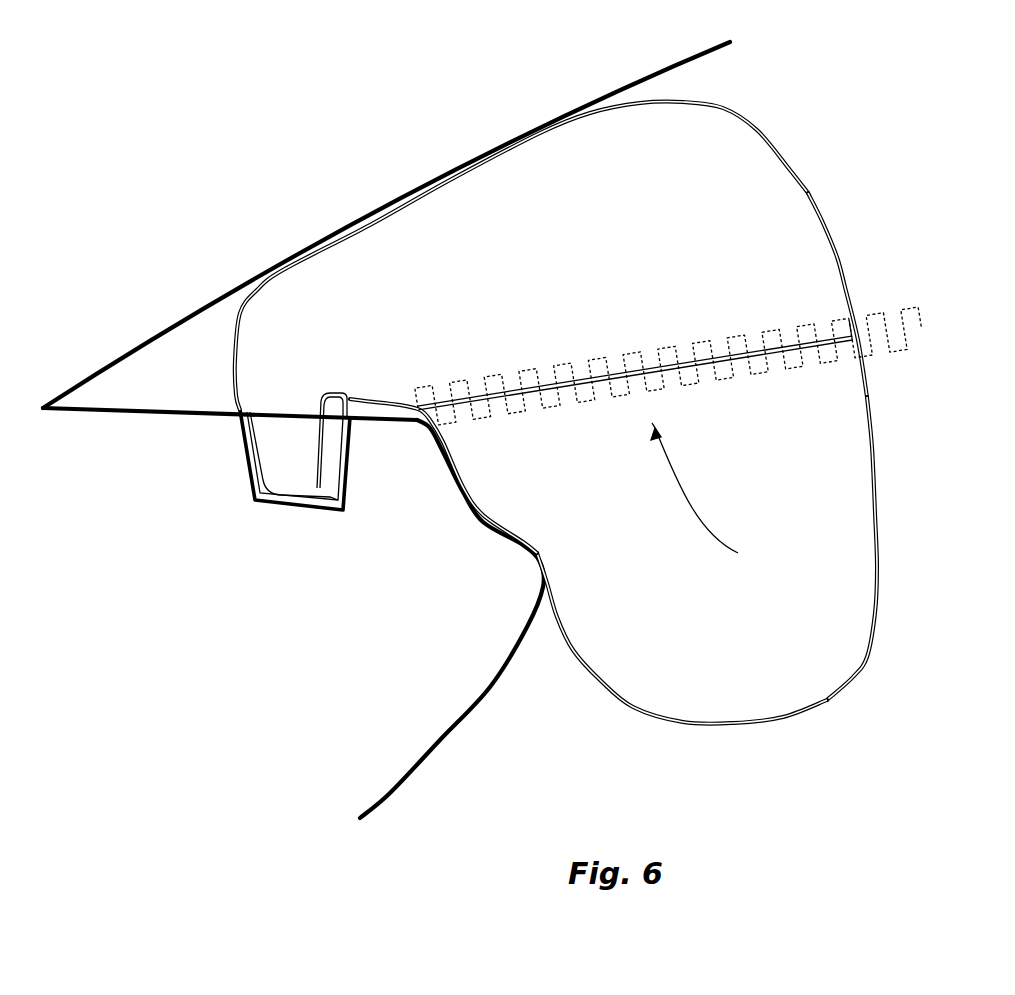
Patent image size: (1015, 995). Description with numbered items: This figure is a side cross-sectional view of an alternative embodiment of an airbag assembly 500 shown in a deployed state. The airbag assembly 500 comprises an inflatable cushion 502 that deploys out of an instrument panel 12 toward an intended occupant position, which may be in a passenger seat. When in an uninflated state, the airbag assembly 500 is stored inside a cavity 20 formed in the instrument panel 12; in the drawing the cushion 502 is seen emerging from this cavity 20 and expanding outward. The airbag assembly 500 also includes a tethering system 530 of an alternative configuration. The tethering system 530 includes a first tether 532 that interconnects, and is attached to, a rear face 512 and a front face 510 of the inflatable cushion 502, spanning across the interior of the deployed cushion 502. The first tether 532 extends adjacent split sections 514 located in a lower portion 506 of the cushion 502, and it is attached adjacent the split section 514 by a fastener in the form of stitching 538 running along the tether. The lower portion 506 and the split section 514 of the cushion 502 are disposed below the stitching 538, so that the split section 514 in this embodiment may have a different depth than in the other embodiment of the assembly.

The instrument panel 12 is at (311, 624).
The cavity 20 is at (262, 480).
The airbag assembly 500 is at (617, 417).
The inflatable cushion 502 is at (808, 193).
The lower portion 506 is at (663, 590).
The front face 510 is at (845, 280).
The rear face 512 is at (480, 532).
The split section 514 is at (848, 575).
The tethering system 530 is at (714, 496).
The first tether 532 is at (615, 377).
The stitching 538 is at (733, 380).